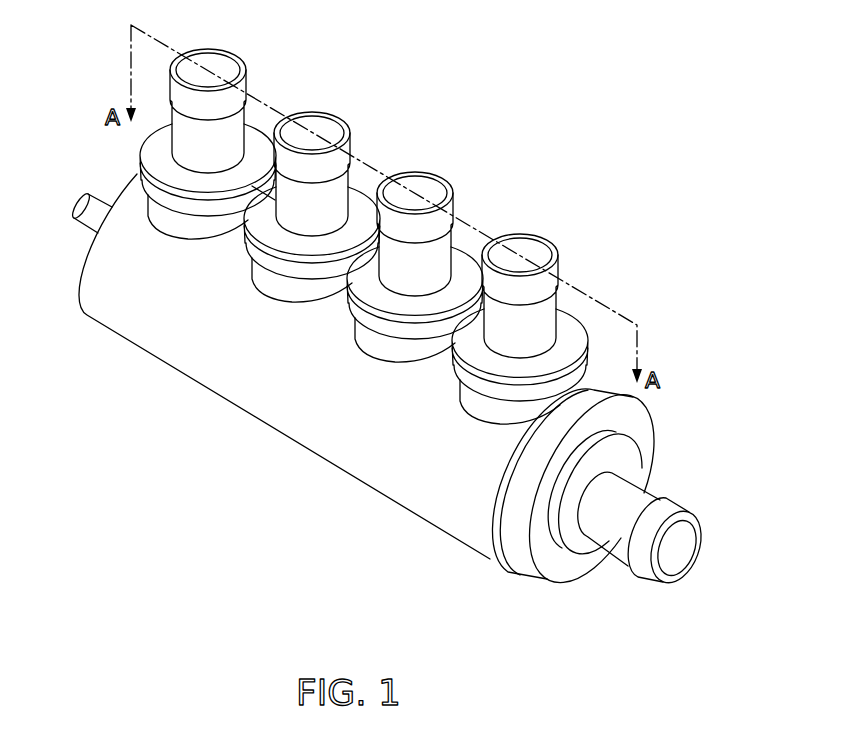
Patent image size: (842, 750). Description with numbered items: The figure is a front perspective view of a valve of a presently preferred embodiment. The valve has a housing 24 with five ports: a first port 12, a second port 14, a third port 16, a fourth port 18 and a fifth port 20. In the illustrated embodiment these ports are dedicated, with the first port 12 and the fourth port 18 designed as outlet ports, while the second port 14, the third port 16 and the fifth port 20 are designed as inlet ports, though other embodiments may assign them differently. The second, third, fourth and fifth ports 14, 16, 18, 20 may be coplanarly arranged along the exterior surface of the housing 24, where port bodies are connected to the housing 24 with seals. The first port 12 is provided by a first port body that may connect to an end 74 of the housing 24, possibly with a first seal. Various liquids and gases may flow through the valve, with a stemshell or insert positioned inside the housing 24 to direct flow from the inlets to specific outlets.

The first port 12 is at (682, 552).
The second port 14 is at (527, 252).
The third port 16 is at (422, 187).
The fourth port 18 is at (318, 130).
The fifth port 20 is at (213, 65).
The housing 24 is at (167, 310).
The end 74 is at (512, 460).